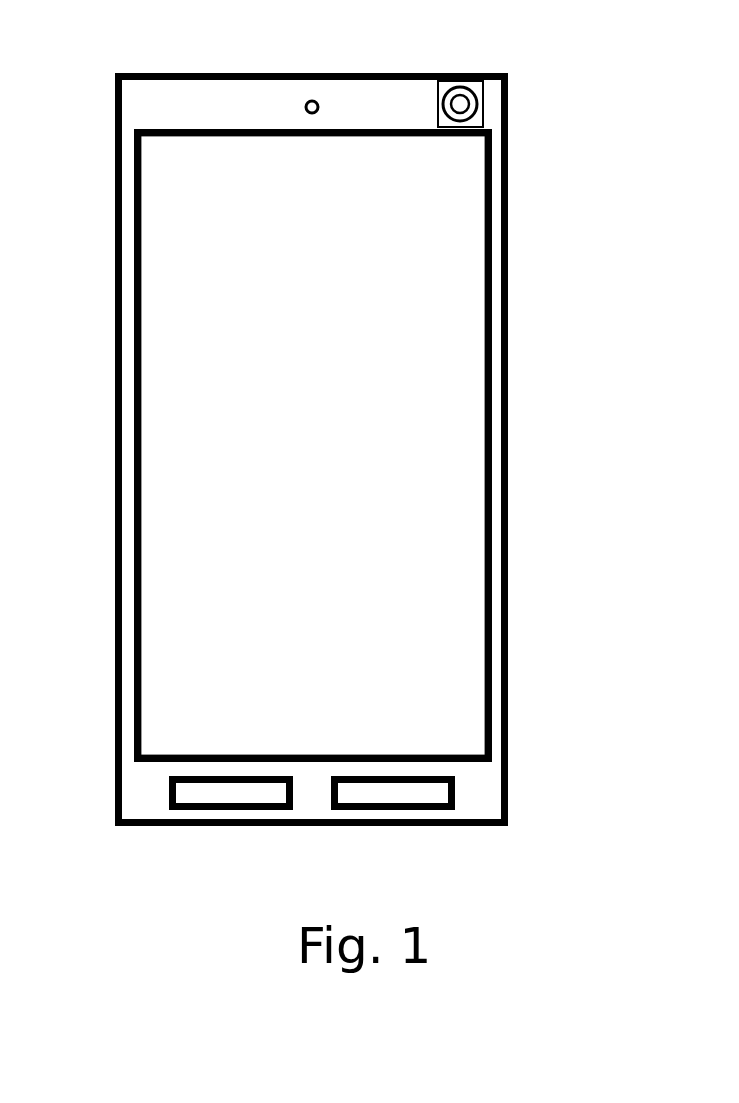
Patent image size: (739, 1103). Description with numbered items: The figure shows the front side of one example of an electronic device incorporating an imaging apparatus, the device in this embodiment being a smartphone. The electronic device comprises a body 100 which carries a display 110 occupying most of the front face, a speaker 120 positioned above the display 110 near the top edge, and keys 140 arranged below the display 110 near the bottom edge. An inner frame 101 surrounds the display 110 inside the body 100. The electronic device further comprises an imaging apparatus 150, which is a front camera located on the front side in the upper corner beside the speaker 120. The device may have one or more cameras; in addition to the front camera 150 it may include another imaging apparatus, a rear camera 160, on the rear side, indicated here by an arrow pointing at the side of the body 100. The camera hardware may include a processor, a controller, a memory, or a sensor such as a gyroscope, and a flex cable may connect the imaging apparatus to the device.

The body 100 is at (128, 108).
The display bezel / front frame 101 is at (128, 222).
The display 110 is at (163, 343).
The speaker 120 is at (306, 100).
The keys 140 is at (348, 776).
The imaging apparatus 150 is at (480, 93).
The rear camera 160 is at (518, 226).